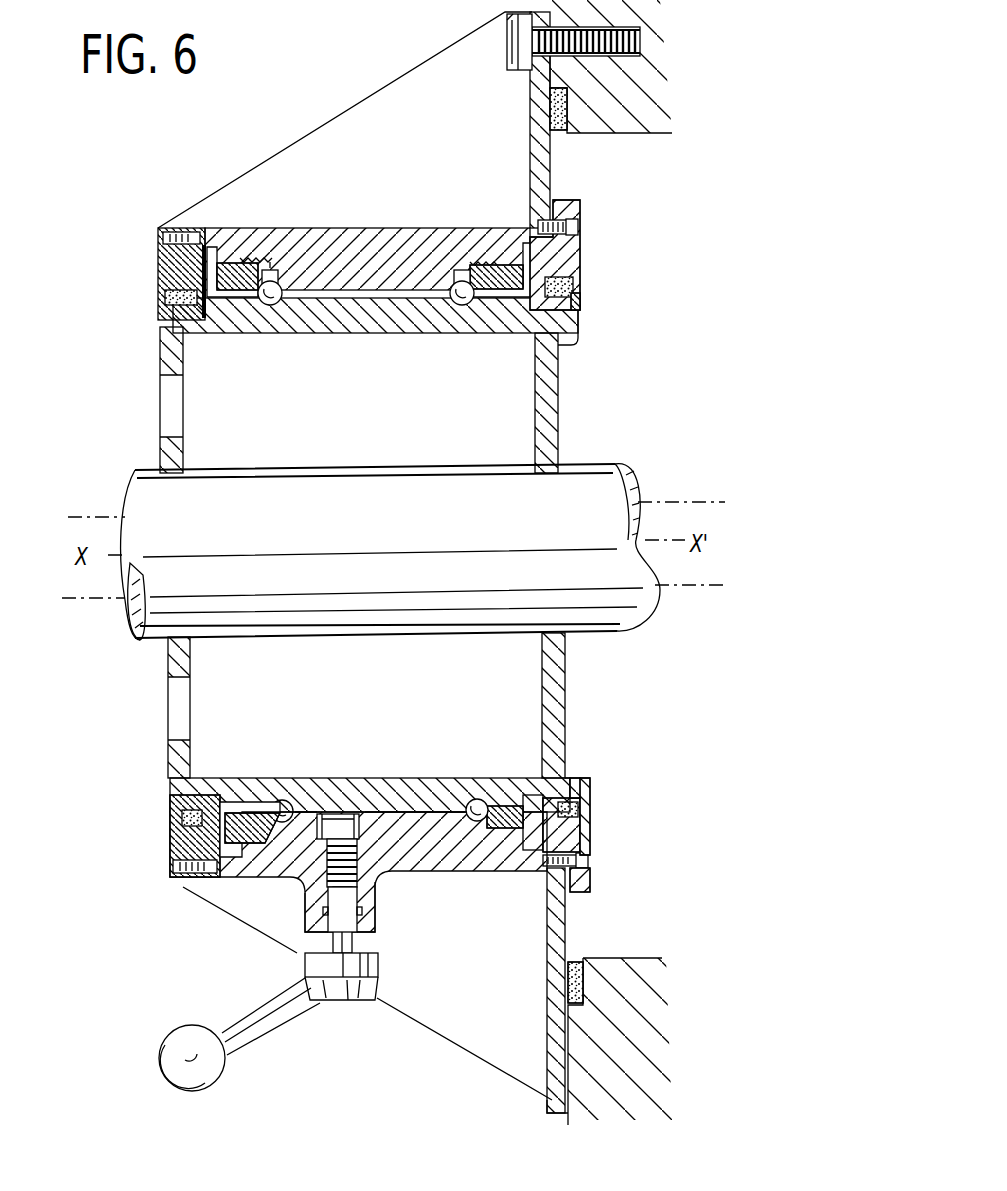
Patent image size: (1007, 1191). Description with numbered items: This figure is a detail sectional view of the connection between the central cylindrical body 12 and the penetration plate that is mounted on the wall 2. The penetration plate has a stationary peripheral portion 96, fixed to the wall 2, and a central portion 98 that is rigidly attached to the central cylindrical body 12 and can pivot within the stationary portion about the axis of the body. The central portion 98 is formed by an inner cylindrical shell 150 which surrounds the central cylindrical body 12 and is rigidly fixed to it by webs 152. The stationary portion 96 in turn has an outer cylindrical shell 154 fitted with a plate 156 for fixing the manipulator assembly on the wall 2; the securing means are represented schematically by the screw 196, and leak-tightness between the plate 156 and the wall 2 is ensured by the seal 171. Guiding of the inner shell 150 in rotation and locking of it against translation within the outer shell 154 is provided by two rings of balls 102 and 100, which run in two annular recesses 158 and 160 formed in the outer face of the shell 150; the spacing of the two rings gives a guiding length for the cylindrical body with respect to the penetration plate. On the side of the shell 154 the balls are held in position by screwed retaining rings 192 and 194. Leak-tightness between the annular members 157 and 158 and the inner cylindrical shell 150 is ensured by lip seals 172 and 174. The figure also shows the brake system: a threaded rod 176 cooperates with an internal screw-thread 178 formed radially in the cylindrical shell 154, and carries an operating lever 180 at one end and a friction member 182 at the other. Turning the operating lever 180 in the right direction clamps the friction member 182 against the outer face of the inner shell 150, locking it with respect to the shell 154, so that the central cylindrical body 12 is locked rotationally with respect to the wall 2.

The wall 2 is at (612, 1040).
The central cylindrical body 12 is at (378, 524).
The peripheral portion 96 is at (568, 930).
The central portion 98 is at (566, 665).
The ball-bearing 100 is at (460, 281).
The ball-bearing 102 is at (262, 281).
The cylindrical shell 150 is at (395, 315).
The webs 152 is at (548, 430).
The cylindrical shell 154 is at (460, 855).
The plate 156 is at (558, 1078).
The annular member 157 is at (165, 238).
The annular recess 158 is at (580, 265).
The annular recess 160 is at (476, 798).
The seal 171 is at (558, 128).
The lip seal 172 is at (588, 290).
The lip seal 174 is at (160, 305).
The threaded rod 176 is at (362, 888).
The internal screw-thread 178 is at (292, 872).
The operating lever 180 is at (195, 1085).
The friction member 182 is at (342, 813).
The screwed retaining ring 192 is at (566, 760).
The screwed retaining ring 194 is at (232, 802).
The screw 196 is at (512, 70).